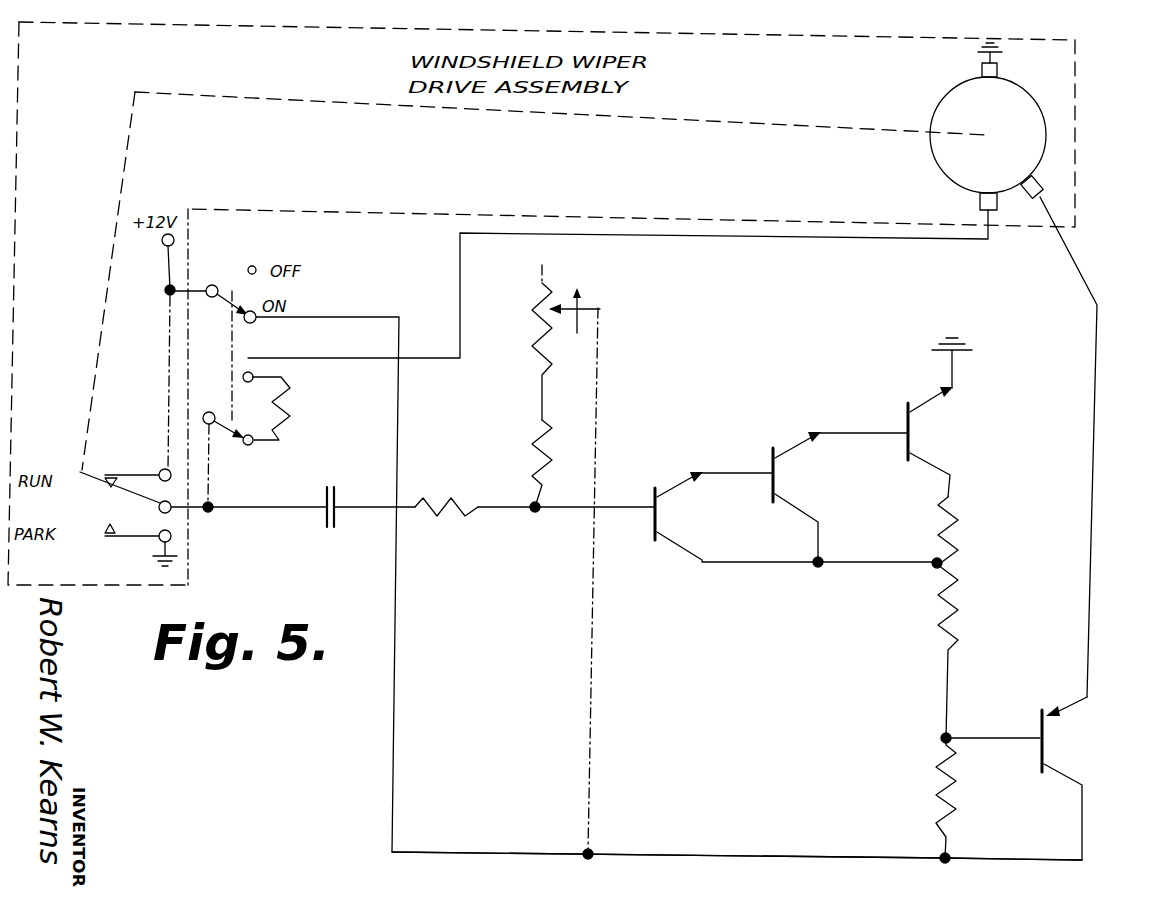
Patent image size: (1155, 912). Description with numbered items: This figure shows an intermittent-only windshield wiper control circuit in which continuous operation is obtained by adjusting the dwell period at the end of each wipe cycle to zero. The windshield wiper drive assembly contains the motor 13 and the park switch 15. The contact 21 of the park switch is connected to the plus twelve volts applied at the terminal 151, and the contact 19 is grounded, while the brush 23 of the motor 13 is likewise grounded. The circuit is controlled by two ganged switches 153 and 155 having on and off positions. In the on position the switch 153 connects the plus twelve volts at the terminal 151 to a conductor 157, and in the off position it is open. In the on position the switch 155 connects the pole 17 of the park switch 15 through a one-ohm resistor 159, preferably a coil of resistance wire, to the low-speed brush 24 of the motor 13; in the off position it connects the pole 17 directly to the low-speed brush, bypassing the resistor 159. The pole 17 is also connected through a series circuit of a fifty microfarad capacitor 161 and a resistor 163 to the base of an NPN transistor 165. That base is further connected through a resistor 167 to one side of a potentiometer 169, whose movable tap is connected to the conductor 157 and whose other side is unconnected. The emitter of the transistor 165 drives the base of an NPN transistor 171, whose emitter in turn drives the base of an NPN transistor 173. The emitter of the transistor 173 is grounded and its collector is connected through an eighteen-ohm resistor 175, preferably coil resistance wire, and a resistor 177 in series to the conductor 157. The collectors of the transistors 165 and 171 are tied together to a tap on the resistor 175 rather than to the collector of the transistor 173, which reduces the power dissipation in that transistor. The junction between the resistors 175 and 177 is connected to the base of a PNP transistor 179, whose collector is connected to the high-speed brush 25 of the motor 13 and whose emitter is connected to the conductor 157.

The motor 13 is at (942, 155).
The park switch 15 is at (82, 503).
The pole of the park switch 17 is at (140, 498).
The contact of the park switch 19 is at (134, 540).
The contact of the park switch 21 is at (143, 472).
The brush of the motor 23 is at (1000, 71).
The low-speed brush 24 is at (980, 203).
The high-speed brush 25 is at (1040, 188).
The terminal 151 is at (175, 238).
The switch 153 is at (236, 300).
The switch 155 is at (221, 435).
The conductor 157 is at (837, 860).
The resistor 159 is at (292, 413).
The capacitor 161 is at (326, 516).
The resistor 163 is at (460, 518).
The NPN transistor 165 is at (654, 524).
The resistor 167 is at (536, 455).
The potentiometer 169 is at (533, 332).
The NPN transistor 171 is at (772, 450).
The NPN transistor 173 is at (906, 412).
The resistor 175 is at (961, 575).
The resistor 177 is at (930, 792).
The PNP transistor 179 is at (1040, 718).